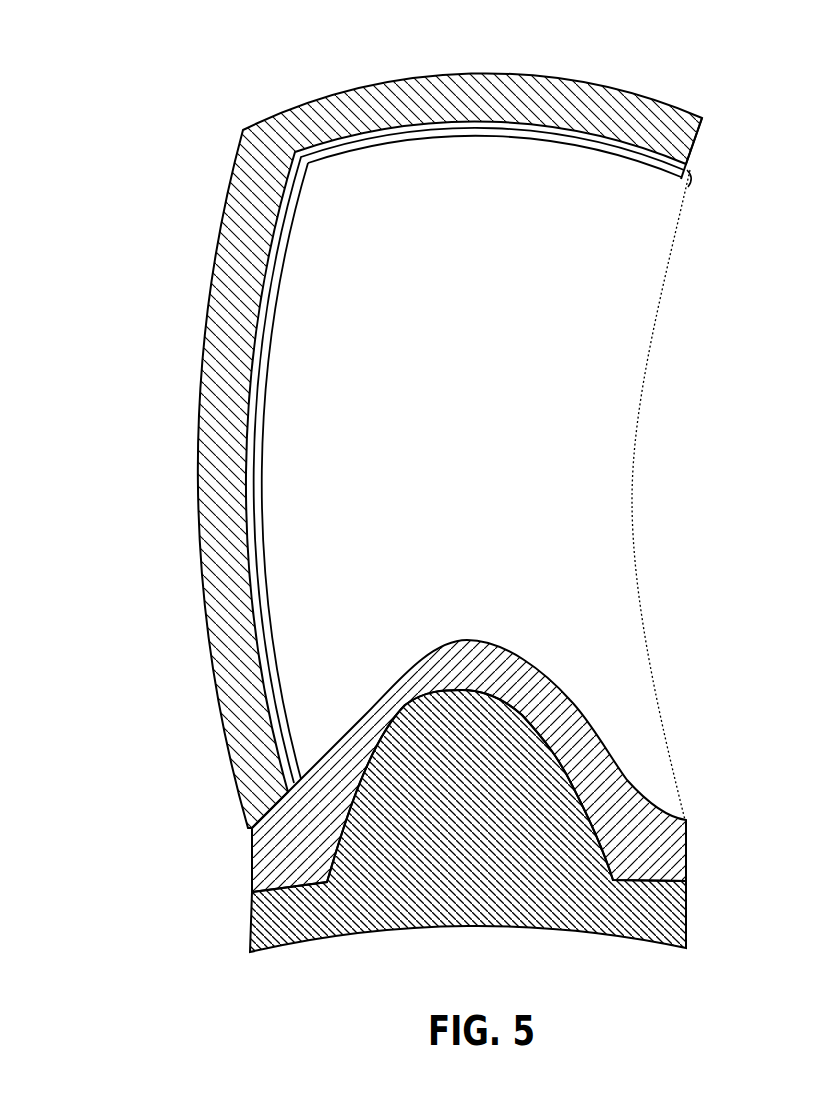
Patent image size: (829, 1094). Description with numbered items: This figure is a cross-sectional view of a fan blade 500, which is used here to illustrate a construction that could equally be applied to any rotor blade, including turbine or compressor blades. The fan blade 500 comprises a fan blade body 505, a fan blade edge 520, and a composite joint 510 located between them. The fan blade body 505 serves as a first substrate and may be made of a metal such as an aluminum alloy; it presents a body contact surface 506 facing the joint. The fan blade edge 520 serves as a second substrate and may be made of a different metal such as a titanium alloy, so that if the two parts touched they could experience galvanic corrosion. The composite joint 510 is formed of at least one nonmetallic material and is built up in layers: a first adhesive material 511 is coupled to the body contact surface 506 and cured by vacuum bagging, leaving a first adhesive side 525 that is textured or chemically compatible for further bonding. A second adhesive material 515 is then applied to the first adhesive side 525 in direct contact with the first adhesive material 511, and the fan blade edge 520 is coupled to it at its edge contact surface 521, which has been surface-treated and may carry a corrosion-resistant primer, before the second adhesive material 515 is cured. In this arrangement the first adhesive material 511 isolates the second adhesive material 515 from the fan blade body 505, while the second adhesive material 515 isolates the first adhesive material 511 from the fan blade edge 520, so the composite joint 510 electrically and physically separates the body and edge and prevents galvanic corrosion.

The fan blade 500 is at (96, 79).
The fan blade body 505 is at (598, 503).
The body contact surface 506 is at (262, 530).
The composite joint 510 is at (690, 173).
The first adhesive material 511 is at (658, 170).
The second adhesive material 515 is at (648, 158).
The fan blade edge 520 is at (237, 190).
The edge contact surface 521 is at (257, 263).
The first adhesive side 525 is at (482, 130).